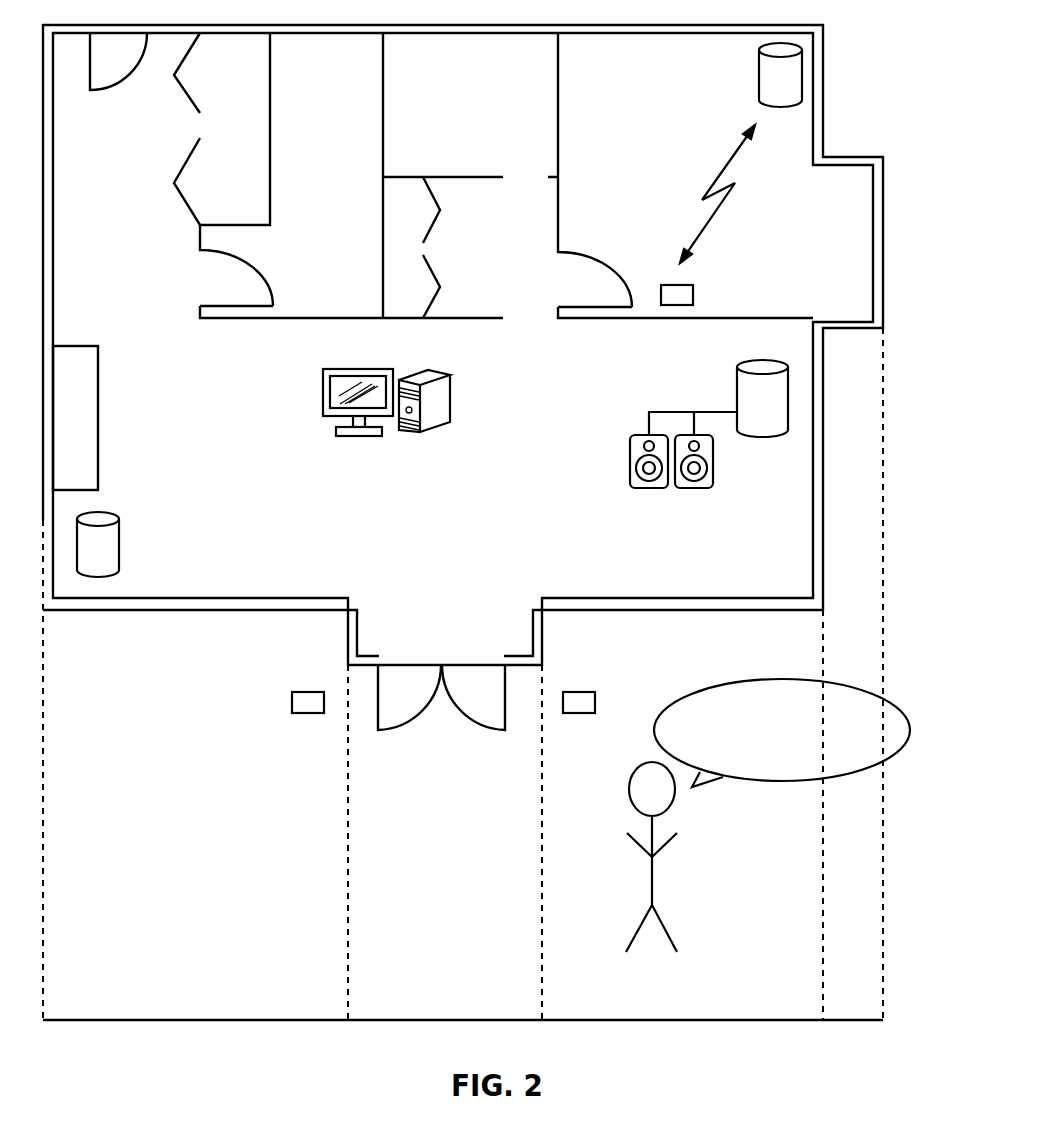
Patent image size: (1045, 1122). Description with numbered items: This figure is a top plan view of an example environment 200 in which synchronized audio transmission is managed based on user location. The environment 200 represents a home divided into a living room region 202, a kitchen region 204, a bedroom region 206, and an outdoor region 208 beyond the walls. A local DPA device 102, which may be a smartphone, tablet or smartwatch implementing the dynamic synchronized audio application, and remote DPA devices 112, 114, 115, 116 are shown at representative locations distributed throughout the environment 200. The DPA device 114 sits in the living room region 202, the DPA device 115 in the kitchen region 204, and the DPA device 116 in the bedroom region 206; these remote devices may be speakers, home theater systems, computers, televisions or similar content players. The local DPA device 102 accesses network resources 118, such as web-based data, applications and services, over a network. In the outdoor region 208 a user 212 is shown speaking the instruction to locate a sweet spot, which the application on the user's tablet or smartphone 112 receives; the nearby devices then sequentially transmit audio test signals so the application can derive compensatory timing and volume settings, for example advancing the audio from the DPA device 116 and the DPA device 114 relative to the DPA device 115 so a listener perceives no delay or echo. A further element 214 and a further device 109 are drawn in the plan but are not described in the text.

The environment 200 is at (880, 84).
The living room region 202 is at (255, 462).
The kitchen region 204 is at (715, 560).
The bedroom region 206 is at (663, 178).
The outdoor region 208 is at (673, 990).
The user 212 is at (723, 795).
The television 214 is at (77, 326).
The local DPA device 102 is at (593, 690).
The network device 109 is at (688, 285).
The remote DPA device 112 is at (300, 690).
The remote DPA device 114 is at (105, 515).
The remote DPA device 115 is at (748, 360).
The remote DPA device 116 is at (759, 97).
The network resources 118 is at (375, 369).